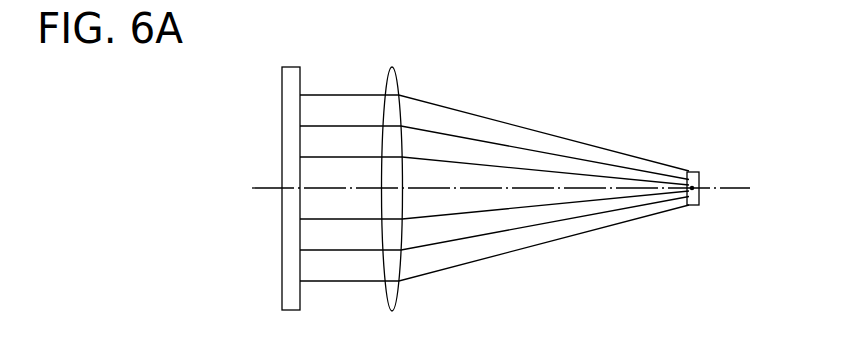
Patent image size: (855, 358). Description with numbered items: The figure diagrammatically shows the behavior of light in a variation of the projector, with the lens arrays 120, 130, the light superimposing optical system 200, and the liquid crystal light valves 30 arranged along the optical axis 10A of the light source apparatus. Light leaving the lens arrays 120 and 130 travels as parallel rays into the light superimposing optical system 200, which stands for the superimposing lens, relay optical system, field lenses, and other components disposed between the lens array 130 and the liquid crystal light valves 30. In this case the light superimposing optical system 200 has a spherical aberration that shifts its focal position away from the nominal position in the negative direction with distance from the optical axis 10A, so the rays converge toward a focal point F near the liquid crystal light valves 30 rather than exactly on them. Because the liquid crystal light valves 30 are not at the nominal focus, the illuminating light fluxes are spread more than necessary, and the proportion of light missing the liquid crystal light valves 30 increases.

The lens array 120 is at (322, 161).
The lens array 130 is at (292, 67).
The light superimposing optical system 200 is at (392, 68).
The liquid crystal light valves 30 is at (698, 172).
The focal point F is at (693, 205).
The optical axis 10A is at (733, 190).